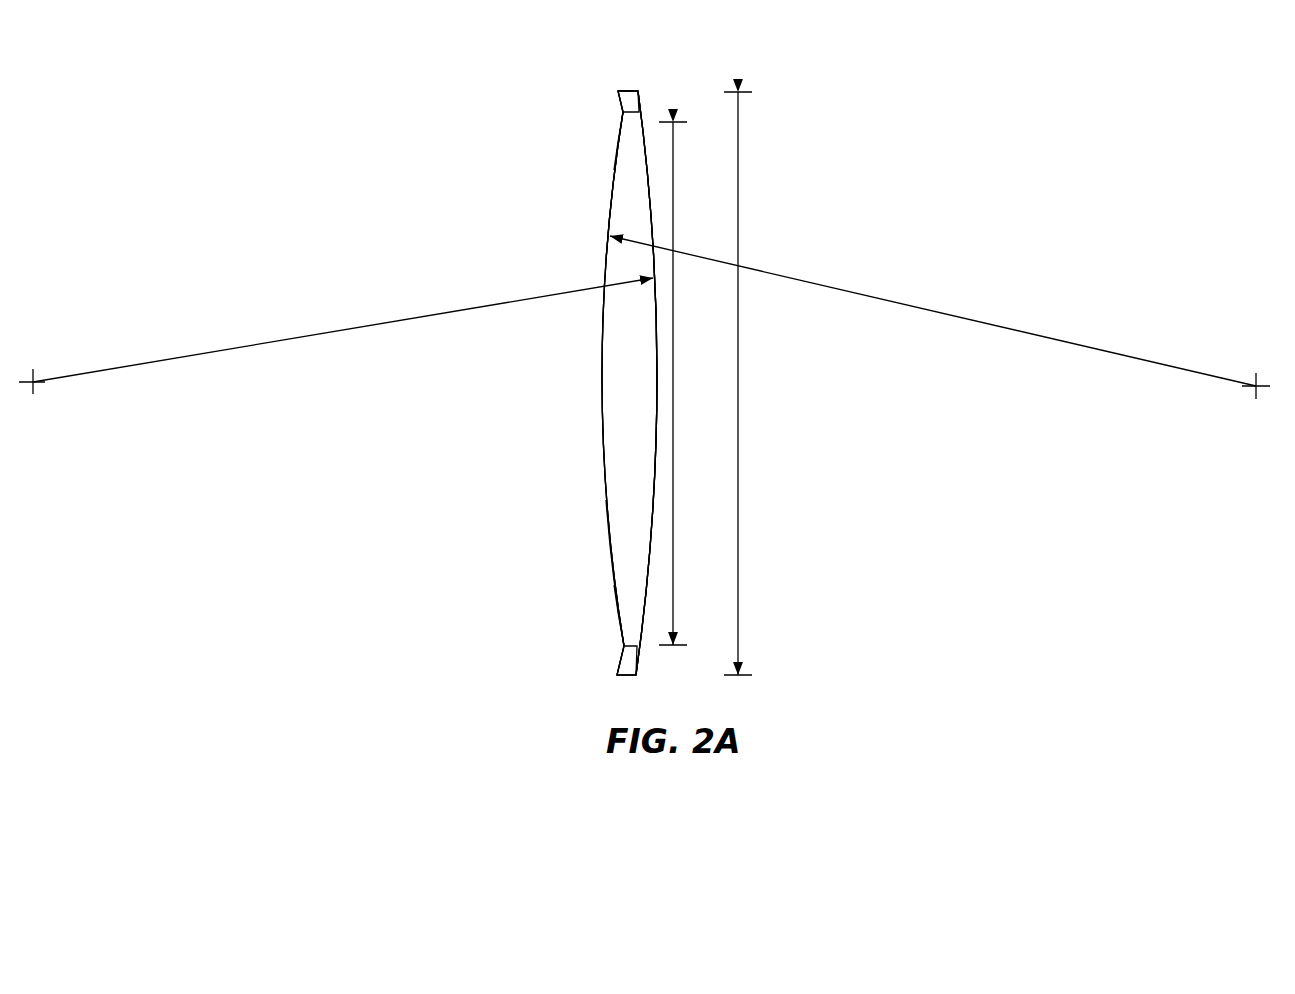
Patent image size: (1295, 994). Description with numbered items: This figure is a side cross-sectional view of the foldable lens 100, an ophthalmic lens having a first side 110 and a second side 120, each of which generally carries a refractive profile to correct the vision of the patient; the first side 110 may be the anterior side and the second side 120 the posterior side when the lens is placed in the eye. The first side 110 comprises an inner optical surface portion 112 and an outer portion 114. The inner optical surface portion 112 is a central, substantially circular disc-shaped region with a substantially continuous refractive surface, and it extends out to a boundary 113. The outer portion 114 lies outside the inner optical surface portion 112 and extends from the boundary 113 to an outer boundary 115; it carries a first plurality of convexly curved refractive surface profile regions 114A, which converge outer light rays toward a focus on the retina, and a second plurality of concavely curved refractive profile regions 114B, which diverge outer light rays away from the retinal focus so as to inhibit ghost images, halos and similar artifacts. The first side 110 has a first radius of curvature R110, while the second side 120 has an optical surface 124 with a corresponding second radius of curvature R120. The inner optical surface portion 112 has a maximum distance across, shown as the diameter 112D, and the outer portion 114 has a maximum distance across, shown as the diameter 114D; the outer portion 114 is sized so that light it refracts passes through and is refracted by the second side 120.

The foldable lens 100 is at (738, 55).
The first side 110 is at (455, 160).
The second side 120 is at (812, 162).
The inner optical surface portion 112 is at (601, 377).
The optical surface 124 is at (657, 401).
The outer boundary 115 is at (640, 92).
The boundary 113 is at (623, 113).
The outer portion 114 is at (621, 110).
The convexly curved refractive surface profile regions 114A is at (600, 100).
The concavely curved refractive profile regions 114B is at (600, 122).
The diameter of inner optical surface portion 112D is at (673, 413).
The diameter of outer portion 114D is at (738, 495).
The second radius of curvature R120 is at (242, 345).
The first radius of curvature R110 is at (1095, 345).